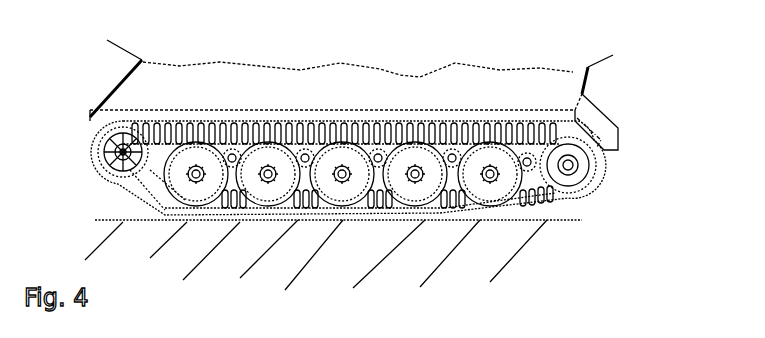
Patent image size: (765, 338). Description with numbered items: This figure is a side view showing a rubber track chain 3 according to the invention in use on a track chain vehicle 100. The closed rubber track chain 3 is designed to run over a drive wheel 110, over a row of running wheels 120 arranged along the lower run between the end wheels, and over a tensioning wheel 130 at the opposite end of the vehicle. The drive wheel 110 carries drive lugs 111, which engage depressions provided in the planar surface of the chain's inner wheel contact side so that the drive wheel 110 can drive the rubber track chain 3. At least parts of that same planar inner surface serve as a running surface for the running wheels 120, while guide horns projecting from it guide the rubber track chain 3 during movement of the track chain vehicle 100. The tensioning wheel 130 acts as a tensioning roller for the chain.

The rubber track chain 3 is at (203, 122).
The track chain vehicle 100 is at (380, 86).
The drive wheel 110 is at (98, 167).
The drive lugs 111 is at (153, 208).
The running wheels 120 is at (467, 196).
The tensioning wheel 130 is at (596, 189).